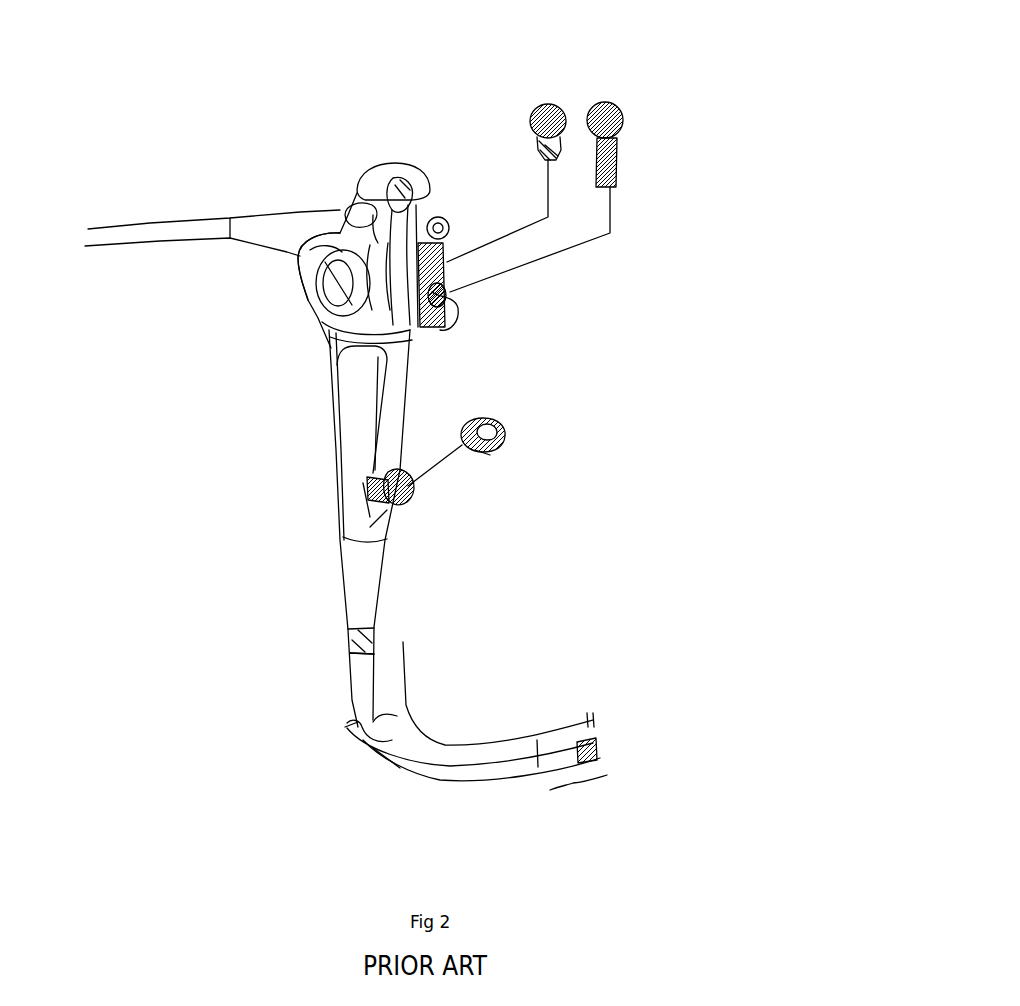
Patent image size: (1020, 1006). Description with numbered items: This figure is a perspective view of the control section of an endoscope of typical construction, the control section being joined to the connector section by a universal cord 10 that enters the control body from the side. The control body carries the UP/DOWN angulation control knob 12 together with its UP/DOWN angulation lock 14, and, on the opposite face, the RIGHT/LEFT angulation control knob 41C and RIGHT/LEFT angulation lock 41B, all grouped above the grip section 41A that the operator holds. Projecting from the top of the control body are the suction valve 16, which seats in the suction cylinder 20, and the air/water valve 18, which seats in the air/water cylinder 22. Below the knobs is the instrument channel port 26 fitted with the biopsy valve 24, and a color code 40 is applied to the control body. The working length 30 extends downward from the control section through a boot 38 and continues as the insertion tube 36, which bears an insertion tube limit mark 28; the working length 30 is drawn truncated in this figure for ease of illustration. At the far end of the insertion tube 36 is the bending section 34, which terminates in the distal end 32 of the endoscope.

The universal cord 10 is at (152, 220).
The UP/DOWN angulation control knob 12 is at (334, 208).
The UP/DOWN angulation lock 14 is at (390, 208).
The suction valve 16 is at (537, 104).
The air/water valve 18 is at (623, 117).
The suction cylinder 20 is at (443, 290).
The air/water cylinder 22 is at (423, 310).
The biopsy valve 24 is at (486, 455).
The instrument channel port 26 is at (413, 490).
The insertion tube limit mark 28 is at (365, 653).
The working length 30 is at (408, 683).
The distal end 32 is at (607, 773).
The bending section 34 is at (573, 790).
The insertion tube 36 is at (393, 758).
The boot 38 is at (343, 567).
The color code 40 is at (367, 478).
The grip section 41A is at (372, 380).
The RIGHT/LEFT angulation lock 41B is at (318, 306).
The RIGHT/LEFT angulation control knob 41C is at (303, 262).